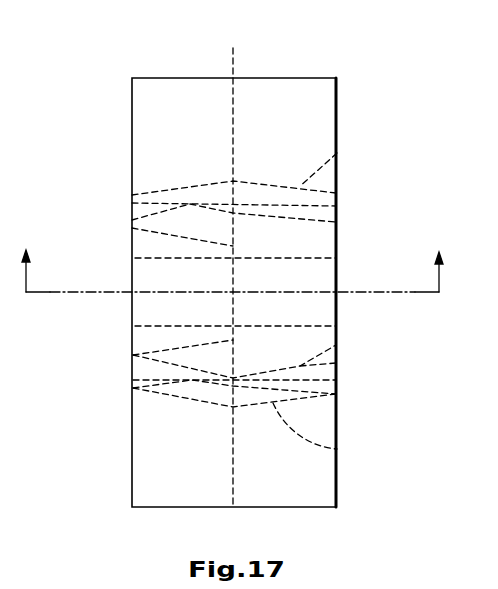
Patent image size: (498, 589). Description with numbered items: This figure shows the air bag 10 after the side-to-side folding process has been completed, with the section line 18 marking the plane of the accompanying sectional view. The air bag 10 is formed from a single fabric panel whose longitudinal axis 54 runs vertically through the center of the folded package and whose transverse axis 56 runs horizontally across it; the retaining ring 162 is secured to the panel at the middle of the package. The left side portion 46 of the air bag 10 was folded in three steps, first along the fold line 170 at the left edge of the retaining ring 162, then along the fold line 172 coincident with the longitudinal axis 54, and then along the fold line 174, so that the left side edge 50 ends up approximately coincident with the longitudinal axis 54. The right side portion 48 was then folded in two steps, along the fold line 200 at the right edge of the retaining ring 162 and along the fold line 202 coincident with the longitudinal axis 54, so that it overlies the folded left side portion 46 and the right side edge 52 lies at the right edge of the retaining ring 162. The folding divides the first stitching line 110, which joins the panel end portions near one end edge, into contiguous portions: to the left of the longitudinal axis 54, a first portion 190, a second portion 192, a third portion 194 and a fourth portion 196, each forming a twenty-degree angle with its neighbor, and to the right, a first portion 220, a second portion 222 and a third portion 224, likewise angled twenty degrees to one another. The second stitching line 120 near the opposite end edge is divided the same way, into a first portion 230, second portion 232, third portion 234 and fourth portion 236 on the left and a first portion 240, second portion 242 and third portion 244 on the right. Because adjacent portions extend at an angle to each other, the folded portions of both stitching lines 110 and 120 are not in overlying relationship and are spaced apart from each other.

The air bag 10 is at (242, 318).
The section line 18- 18 is at (235, 257).
The left side portion 46 is at (174, 90).
The right side portion 48 is at (293, 88).
The left side edge 50 is at (233, 162).
The right side edge 52 is at (337, 122).
The longitudinal axis 54 is at (233, 70).
The transverse axis 56 is at (344, 293).
The first stitching line 110 is at (199, 185).
The second stitching line 120 is at (199, 399).
The retaining ring 162 is at (245, 258).
The fold line 170 is at (130, 90).
The fold line 172 is at (233, 142).
The fold line 174 is at (132, 128).
The first portion of first stitching line 190 is at (163, 190).
The second portion of first stitching line 192 is at (187, 205).
The third portion of first stitching line 194 is at (160, 224).
The fourth portion of first stitching line 196 is at (173, 237).
The fold line 200 is at (337, 110).
The fold line 202 is at (231, 127).
The first portion of stitching line section 220 is at (337, 153).
The second portion of stitching line section 222 is at (337, 194).
The third portion of stitching line section 224 is at (337, 217).
The first portion of second stitching line 230 is at (163, 395).
The second portion of second stitching line 232 is at (192, 380).
The third portion of second stitching line 234 is at (157, 360).
The fourth portion of second stitching line 236 is at (163, 350).
The first portion of second stitching line section 240 is at (337, 449).
The second portion of second stitching line section 242 is at (337, 387).
The third portion of second stitching line section 244 is at (337, 344).